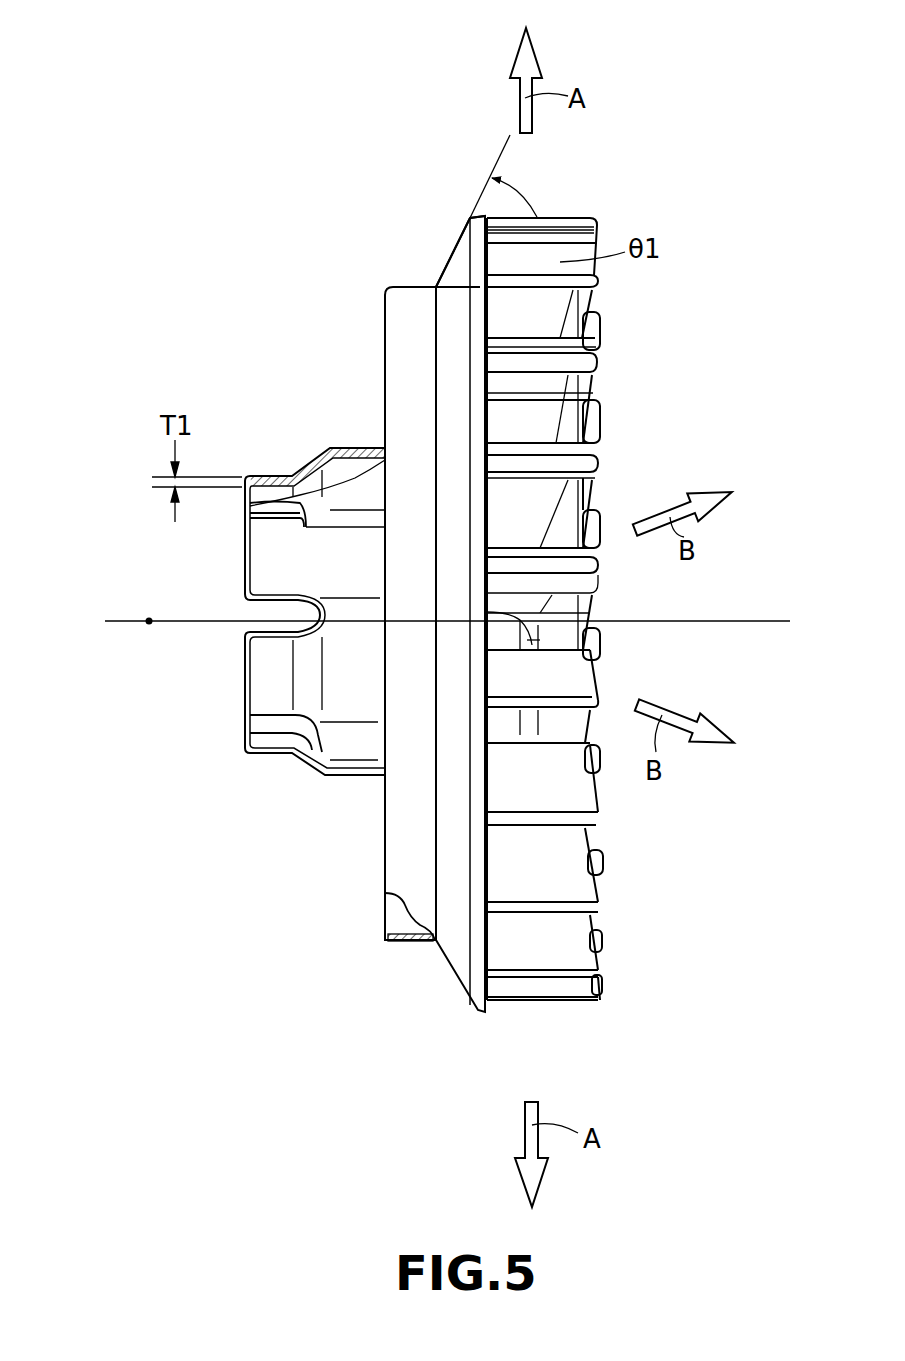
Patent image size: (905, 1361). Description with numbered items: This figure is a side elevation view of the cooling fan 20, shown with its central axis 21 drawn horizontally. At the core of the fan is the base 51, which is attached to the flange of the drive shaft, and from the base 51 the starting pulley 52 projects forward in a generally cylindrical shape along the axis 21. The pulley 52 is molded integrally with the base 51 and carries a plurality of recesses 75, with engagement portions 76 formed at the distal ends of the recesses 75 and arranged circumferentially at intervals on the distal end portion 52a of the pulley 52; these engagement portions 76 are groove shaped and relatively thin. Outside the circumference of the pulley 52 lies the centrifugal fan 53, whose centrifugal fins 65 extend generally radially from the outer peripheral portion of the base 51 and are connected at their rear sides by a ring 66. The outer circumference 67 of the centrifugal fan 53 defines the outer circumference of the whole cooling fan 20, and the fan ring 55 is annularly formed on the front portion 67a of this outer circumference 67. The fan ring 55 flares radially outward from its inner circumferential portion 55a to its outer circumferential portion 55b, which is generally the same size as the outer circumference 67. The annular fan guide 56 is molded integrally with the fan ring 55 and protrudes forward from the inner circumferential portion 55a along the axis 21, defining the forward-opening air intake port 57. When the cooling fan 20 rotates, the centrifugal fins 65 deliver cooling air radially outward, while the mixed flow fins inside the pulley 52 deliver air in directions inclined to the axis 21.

The cooling fan 20 is at (330, 190).
The axis 21 is at (149, 621).
The base 51 is at (530, 642).
The starting pulley 52 is at (330, 748).
The distal end portion of the pulley 52a is at (258, 680).
The centrifugal fan 53 is at (593, 214).
The fan ring 55 is at (450, 398).
The inner circumferential portion of the fan ring 55a is at (440, 283).
The outer circumferential portion of the fan ring 55b is at (468, 212).
The fan guide 56 is at (400, 333).
The air intake port 57 is at (390, 918).
The centrifugal fins 65 is at (558, 443).
The ring 66 is at (585, 495).
The outer circumference of the centrifugal fan 67 is at (550, 218).
The front portion of the outer circumference 67a is at (557, 287).
The recesses 75 is at (365, 560).
The engagement portions 76 is at (290, 555).